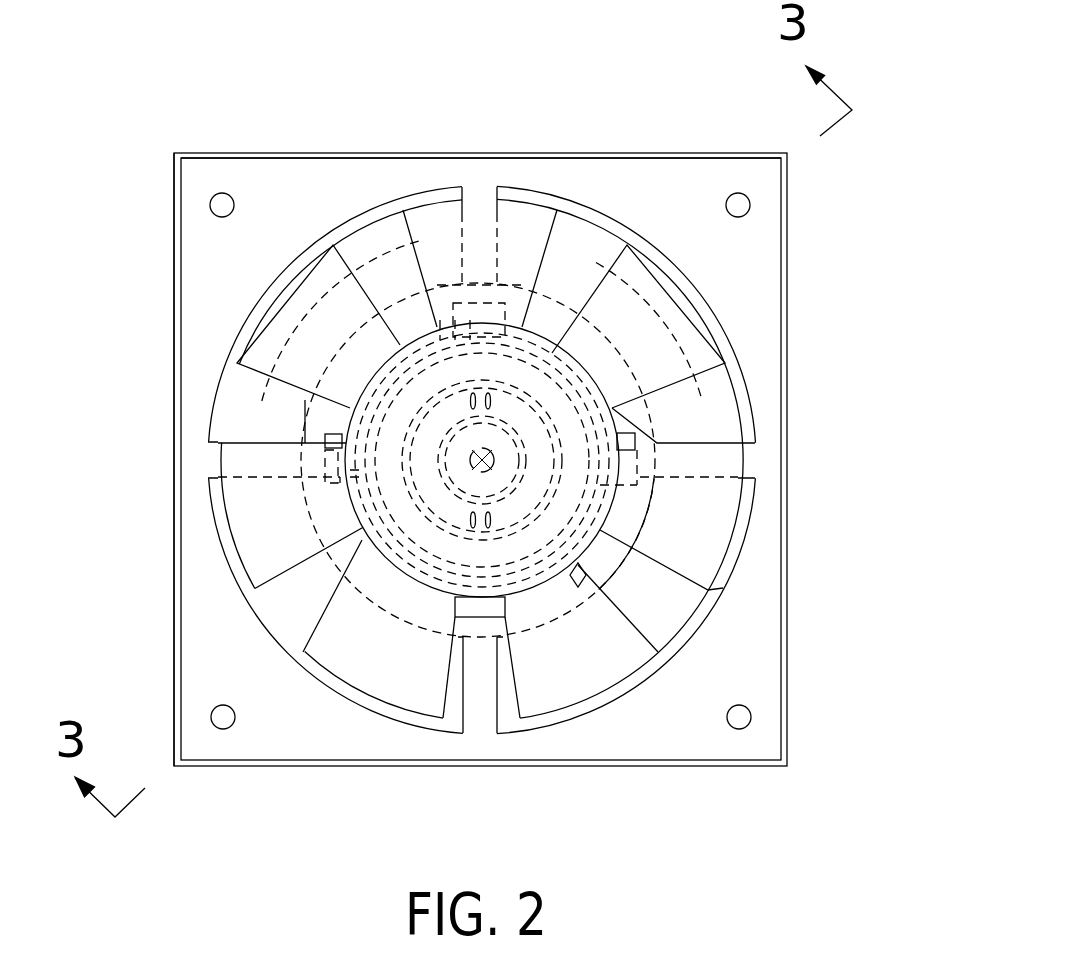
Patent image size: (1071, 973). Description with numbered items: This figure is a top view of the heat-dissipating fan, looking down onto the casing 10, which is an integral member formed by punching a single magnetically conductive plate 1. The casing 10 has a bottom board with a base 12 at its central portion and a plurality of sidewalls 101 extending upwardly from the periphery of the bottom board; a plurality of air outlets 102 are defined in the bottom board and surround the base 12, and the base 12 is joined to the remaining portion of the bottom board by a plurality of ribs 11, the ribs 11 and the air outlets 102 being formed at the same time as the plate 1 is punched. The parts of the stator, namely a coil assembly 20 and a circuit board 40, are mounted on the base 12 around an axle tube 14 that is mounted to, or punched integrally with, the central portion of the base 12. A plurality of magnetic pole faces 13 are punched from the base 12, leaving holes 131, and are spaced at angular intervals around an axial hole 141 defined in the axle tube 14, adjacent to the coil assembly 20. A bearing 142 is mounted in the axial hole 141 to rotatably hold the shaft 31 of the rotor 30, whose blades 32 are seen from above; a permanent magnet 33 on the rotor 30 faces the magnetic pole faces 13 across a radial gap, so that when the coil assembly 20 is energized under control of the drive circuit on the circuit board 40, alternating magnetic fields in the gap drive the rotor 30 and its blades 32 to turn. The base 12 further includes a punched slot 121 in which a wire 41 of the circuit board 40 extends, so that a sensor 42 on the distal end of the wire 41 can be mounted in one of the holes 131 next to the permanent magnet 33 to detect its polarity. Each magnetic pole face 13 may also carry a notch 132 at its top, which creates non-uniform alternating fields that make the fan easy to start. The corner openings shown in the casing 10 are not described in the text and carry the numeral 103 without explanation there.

The magnetically conductive plate 1 is at (268, 185).
The casing 10 is at (303, 777).
The sidewalls 101 is at (180, 283).
The air outlets 102 is at (368, 237).
The mounting holes 103 is at (225, 203).
The ribs 11 is at (213, 462).
The base 12 is at (323, 422).
The slot 121 is at (363, 525).
The magnetic pole faces 13 is at (593, 373).
The holes 131 is at (320, 440).
The notch 132 is at (570, 337).
The axle tube 14 is at (735, 592).
The axial hole 141 is at (482, 320).
The bearing 142 is at (565, 460).
The coil assembly 20 is at (505, 605).
The rotor 30 is at (417, 333).
The shaft 31 is at (505, 455).
The blades 32 is at (523, 228).
The permanent magnet 33 is at (345, 580).
The circuit board 40 is at (573, 590).
The wire 41 is at (355, 473).
The sensor 42 is at (300, 478).